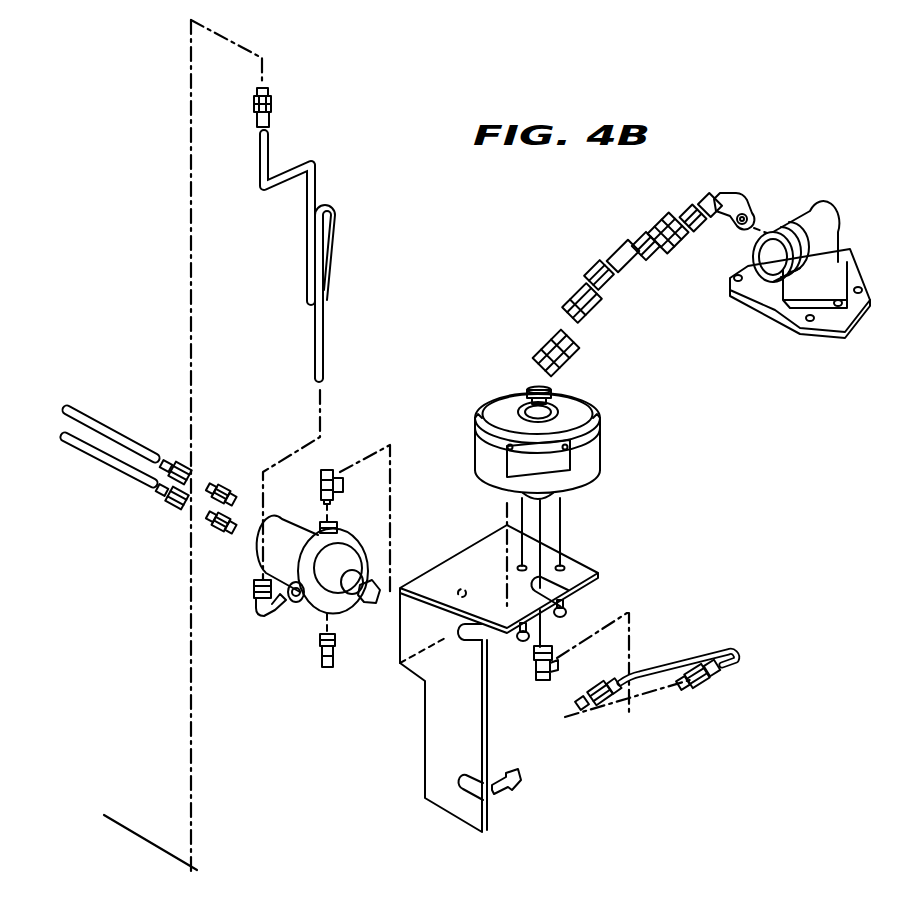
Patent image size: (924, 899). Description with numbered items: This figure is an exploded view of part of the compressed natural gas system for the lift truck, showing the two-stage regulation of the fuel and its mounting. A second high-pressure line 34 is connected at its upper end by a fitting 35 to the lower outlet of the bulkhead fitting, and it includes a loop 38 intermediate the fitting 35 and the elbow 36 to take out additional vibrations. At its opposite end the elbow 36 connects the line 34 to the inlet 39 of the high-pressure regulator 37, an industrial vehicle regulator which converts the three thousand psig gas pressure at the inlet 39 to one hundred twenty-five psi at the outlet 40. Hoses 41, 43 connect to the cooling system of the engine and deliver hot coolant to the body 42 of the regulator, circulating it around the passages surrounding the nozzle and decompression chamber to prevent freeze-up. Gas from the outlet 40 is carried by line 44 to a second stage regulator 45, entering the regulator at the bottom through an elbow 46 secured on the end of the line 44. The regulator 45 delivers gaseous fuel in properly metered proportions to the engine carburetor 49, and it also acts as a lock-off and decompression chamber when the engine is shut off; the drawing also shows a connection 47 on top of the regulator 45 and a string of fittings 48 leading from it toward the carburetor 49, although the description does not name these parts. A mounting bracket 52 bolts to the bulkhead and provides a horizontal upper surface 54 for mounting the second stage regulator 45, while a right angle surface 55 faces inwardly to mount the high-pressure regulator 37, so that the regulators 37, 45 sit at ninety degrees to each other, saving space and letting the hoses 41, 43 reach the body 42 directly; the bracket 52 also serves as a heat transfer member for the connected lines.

The second high-pressure line 34 is at (313, 173).
The fitting 35 is at (273, 118).
The elbow 36 is at (263, 613).
The high-pressure regulator 37 is at (358, 532).
The loop 38 is at (333, 240).
The inlet 39 is at (298, 607).
The outlet 40 is at (325, 530).
The hose 41 is at (98, 455).
The body 42 is at (298, 560).
The hose 43 is at (126, 437).
The line 44 is at (665, 667).
The second stage regulator 45 is at (585, 460).
The elbow 46 is at (552, 657).
The nipple 47 is at (550, 392).
The fitting assembly 48 is at (574, 291).
The engine carburetor 49 is at (841, 214).
The mounting bracket 52 is at (468, 730).
The horizontal upper surface 54 is at (580, 567).
The right angle surface 55 is at (460, 588).